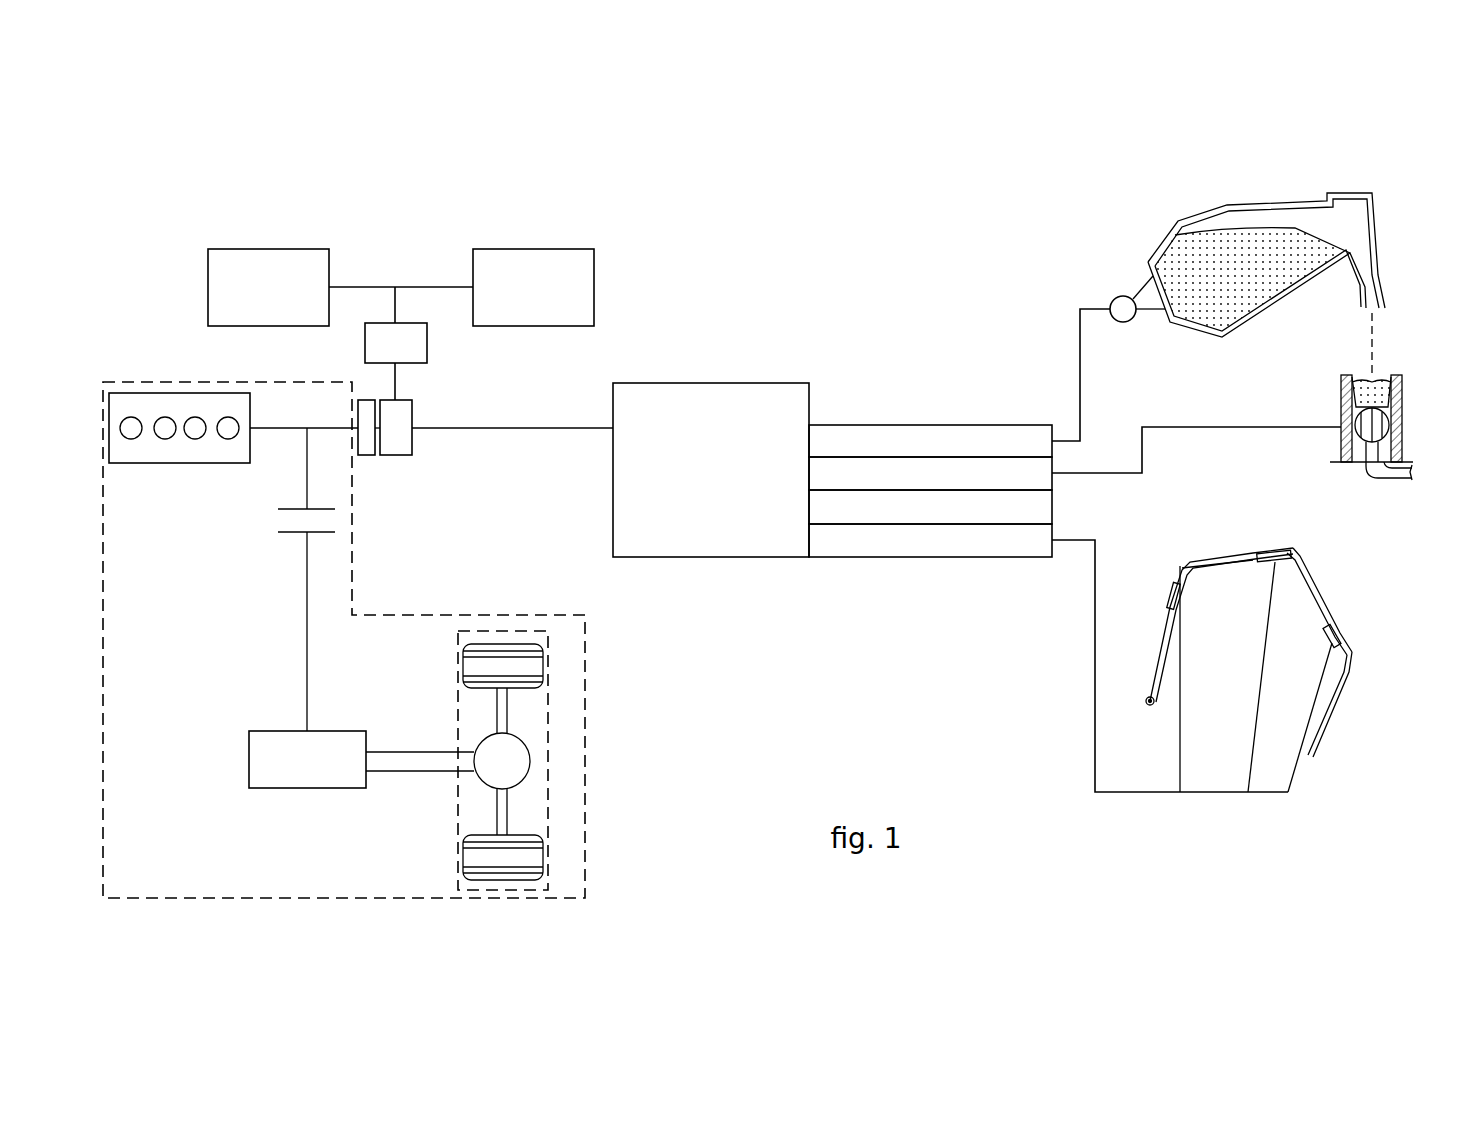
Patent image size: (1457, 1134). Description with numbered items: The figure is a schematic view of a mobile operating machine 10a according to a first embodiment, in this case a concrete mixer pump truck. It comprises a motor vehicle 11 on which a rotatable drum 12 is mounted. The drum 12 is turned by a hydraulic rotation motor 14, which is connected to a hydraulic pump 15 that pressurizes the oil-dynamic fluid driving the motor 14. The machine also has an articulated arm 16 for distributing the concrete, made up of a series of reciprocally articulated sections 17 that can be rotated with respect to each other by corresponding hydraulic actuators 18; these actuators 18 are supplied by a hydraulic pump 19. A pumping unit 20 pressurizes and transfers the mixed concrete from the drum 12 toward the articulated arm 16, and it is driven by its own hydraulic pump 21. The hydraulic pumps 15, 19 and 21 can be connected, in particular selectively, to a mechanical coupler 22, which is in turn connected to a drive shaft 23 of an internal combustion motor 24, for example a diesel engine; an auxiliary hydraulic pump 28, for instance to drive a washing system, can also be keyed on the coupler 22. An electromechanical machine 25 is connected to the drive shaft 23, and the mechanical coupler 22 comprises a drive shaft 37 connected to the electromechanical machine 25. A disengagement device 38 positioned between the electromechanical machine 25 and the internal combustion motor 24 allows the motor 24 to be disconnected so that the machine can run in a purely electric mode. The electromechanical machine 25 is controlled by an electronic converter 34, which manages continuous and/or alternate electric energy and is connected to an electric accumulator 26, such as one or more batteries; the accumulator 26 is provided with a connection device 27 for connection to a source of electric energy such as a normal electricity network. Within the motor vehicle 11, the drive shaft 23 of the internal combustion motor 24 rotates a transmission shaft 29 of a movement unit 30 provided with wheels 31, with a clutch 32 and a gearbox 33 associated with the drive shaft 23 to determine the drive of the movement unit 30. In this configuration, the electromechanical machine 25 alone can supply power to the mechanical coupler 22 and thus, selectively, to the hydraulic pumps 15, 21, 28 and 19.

The mobile operating machine 10a is at (141, 265).
The motor vehicle 11 is at (297, 380).
The rotatable drum 12 is at (1213, 203).
The hydraulic rotation motor 14 is at (1123, 309).
The hydraulic pump 15 is at (997, 443).
The articulated arm 16 is at (1263, 646).
The articulated sections 17 is at (1208, 562).
The hydraulic actuators 18 is at (1267, 560).
The hydraulic pump 19 is at (1032, 538).
The pumping unit 20 is at (1414, 376).
The hydraulic pump 21 is at (856, 477).
The mechanical coupler 22 is at (698, 483).
The drive shaft 23 is at (330, 428).
The internal combustion motor 24 is at (141, 415).
The electromechanical machine 25 is at (382, 440).
The electric accumulator 26 is at (518, 300).
The connection device 27 is at (253, 300).
The auxiliary hydraulic pump 28 is at (924, 502).
The transmission shaft 29 is at (307, 595).
The movement unit 30 is at (552, 772).
The wheels 31 is at (525, 664).
The clutch 32 is at (289, 536).
The gearbox 33 is at (293, 773).
The electronic converter 34 is at (381, 356).
The drive shaft 37 is at (511, 428).
The disengagement device 38 is at (366, 440).